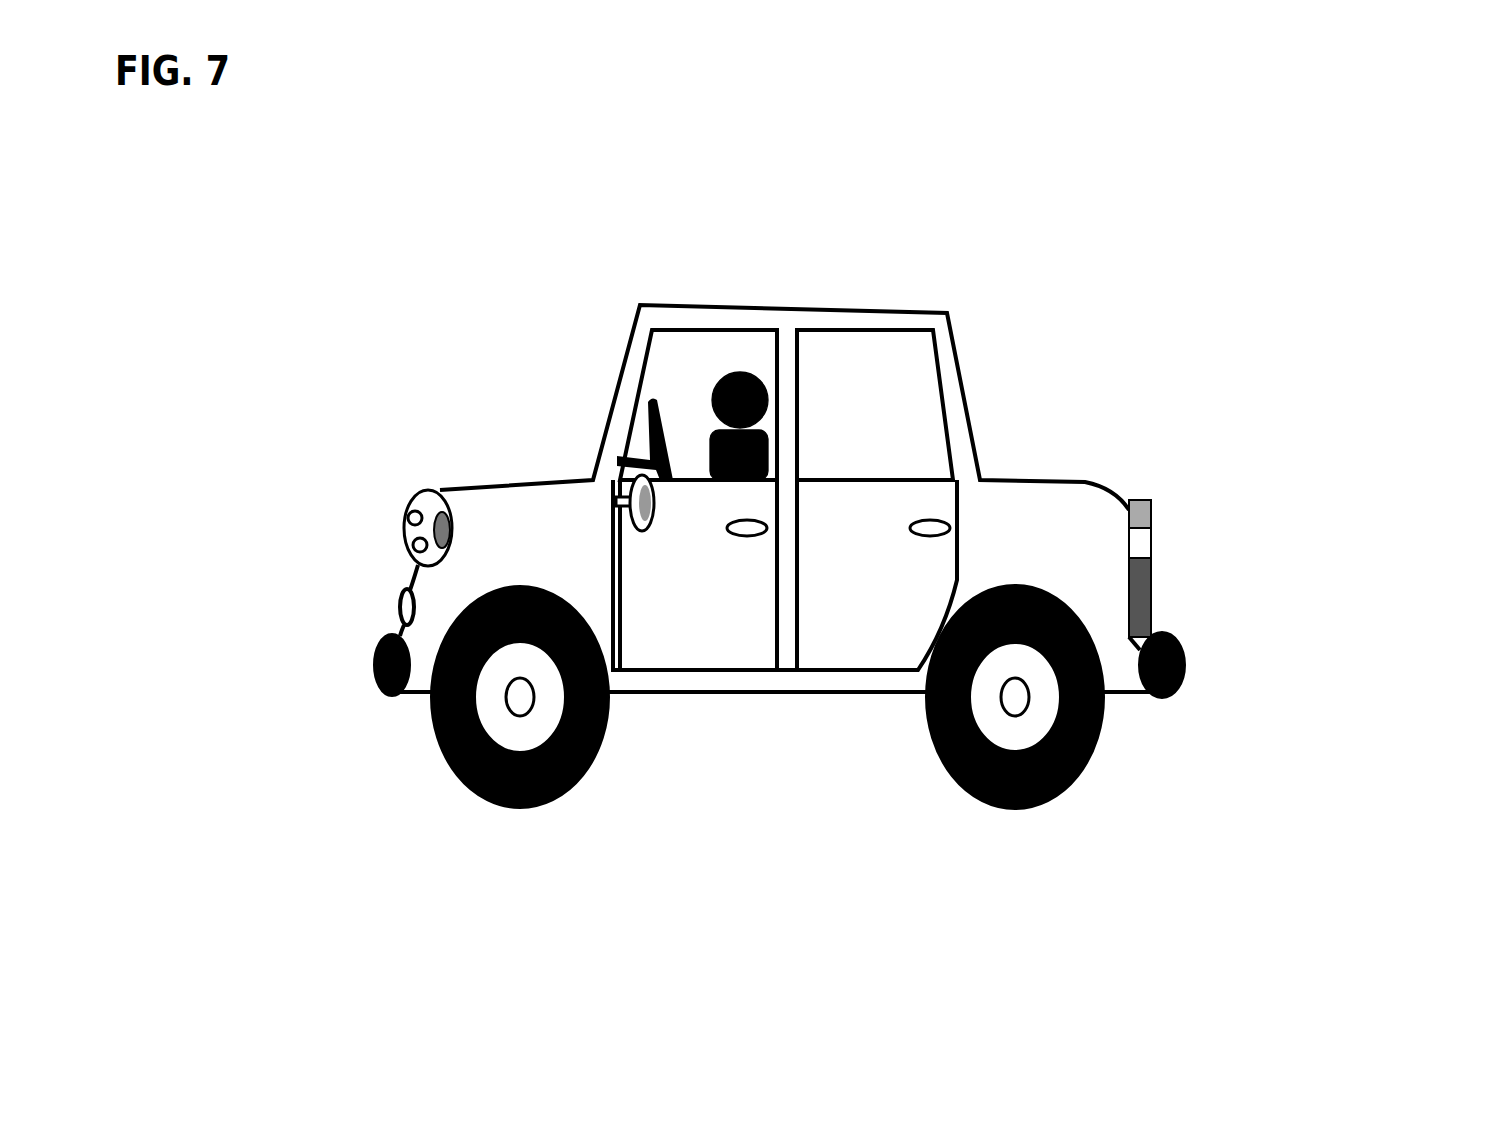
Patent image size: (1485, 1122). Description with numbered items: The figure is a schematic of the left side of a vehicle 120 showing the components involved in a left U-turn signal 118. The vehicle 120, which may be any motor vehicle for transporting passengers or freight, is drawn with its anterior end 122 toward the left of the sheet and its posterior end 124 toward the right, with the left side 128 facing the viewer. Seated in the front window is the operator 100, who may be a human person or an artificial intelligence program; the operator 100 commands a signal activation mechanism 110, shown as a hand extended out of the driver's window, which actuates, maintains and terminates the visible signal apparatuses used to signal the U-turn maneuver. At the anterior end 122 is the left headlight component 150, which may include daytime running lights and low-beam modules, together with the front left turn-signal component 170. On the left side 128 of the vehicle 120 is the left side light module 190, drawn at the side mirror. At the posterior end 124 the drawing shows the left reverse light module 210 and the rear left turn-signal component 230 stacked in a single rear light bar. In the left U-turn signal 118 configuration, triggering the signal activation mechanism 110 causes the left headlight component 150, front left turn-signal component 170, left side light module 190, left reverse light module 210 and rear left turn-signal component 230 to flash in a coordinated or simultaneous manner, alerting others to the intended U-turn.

The left U-turn signal 118 is at (274, 182).
The operator 100 is at (752, 363).
The signal activation mechanism 110 is at (662, 402).
The vehicle 120 is at (947, 312).
The anterior end 122 is at (332, 580).
The posterior end 124 is at (1277, 603).
The left side 128 is at (858, 735).
The left headlight component 150 is at (407, 512).
The front left turn-signal component 170 is at (442, 515).
The left side light module 190 is at (657, 535).
The left reverse light module 210 is at (1155, 543).
The rear left turn-signal component 230 is at (1143, 495).